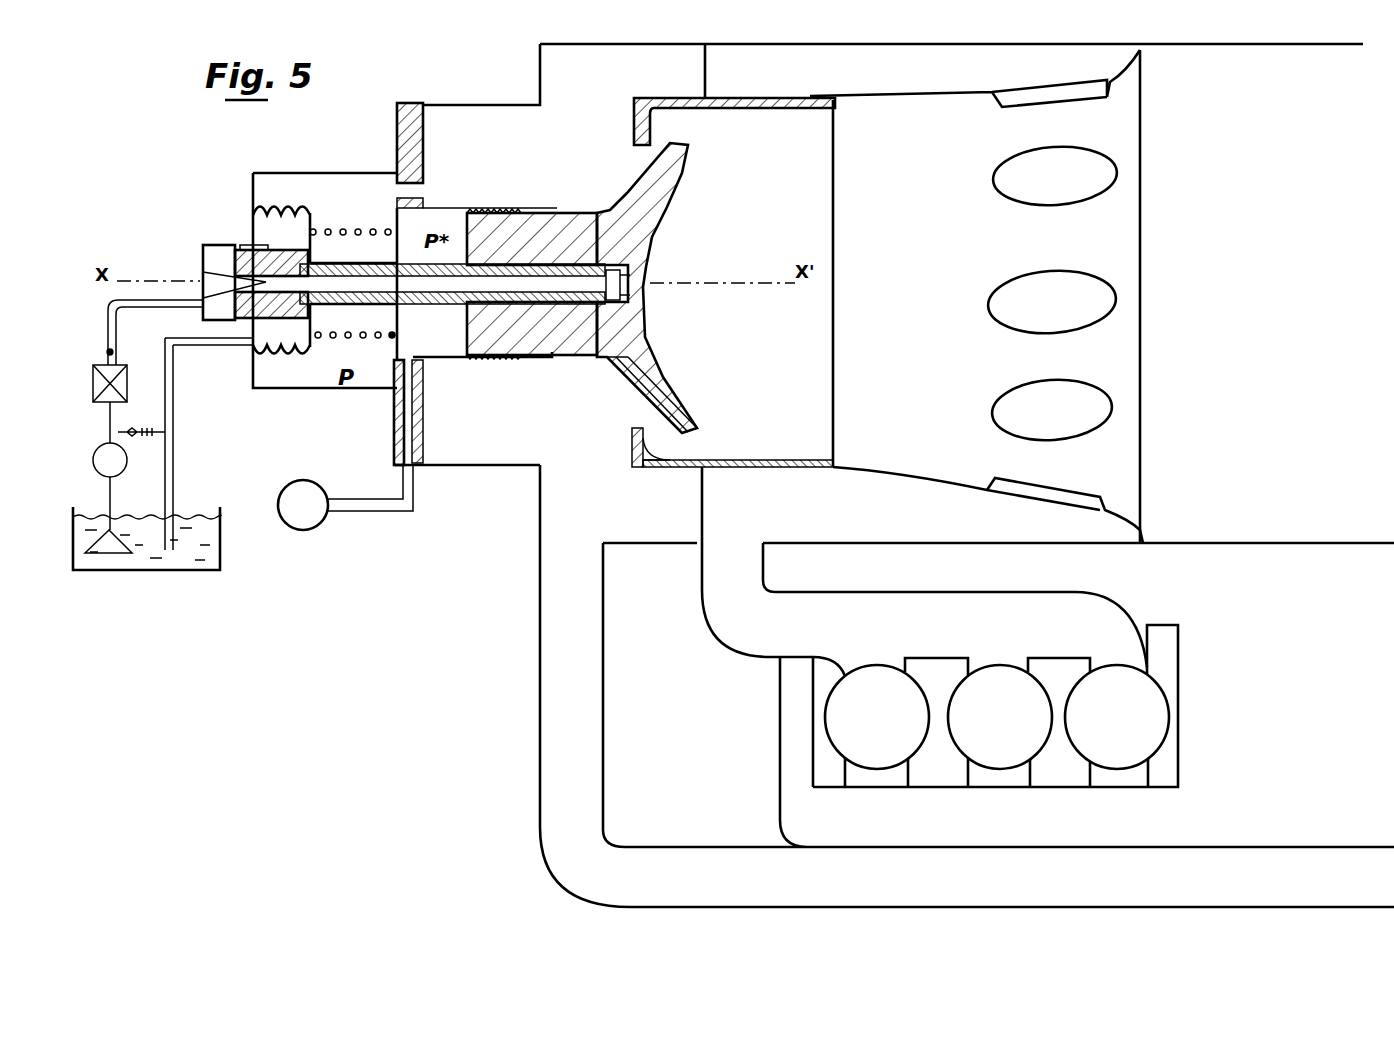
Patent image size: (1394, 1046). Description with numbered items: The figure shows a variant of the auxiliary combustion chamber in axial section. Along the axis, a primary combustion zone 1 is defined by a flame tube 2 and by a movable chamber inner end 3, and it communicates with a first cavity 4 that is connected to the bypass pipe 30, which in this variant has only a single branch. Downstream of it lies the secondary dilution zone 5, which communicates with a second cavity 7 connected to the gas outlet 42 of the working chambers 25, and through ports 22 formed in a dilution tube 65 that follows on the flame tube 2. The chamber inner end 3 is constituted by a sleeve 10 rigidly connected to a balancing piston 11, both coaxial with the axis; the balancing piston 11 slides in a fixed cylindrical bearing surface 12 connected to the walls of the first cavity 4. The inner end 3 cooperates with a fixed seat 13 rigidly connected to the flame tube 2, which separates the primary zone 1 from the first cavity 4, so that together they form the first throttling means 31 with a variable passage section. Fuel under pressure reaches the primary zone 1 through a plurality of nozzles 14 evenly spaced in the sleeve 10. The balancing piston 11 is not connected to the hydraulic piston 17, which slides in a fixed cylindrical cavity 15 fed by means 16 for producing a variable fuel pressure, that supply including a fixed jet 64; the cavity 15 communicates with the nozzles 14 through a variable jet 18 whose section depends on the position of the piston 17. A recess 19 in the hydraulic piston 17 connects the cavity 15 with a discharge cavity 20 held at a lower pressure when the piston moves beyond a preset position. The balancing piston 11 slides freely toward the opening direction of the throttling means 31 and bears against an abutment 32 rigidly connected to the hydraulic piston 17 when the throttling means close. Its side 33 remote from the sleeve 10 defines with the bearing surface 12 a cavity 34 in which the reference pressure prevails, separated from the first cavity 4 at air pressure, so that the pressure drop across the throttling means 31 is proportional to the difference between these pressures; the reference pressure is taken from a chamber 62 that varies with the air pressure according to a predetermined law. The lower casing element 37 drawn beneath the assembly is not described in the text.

The primary combustion zone 1 is at (738, 205).
The flame tube 2 is at (762, 460).
The chamber inner end 3 is at (658, 333).
The first cavity 4 is at (486, 166).
The secondary dilution zone 5 is at (1295, 176).
The second cavity 7 is at (878, 517).
The sleeve 10 is at (672, 384).
The balancing piston 11 is at (599, 342).
The cylindrical bearing surface 12 is at (497, 212).
The fixed seat 13 is at (622, 440).
The nozzles 14 is at (690, 413).
The fixed cylindrical cavity 15 is at (213, 302).
The means for producing variable fuel pressure 16 is at (90, 347).
The hydraulic piston 17 is at (277, 372).
The variable jet 18 is at (248, 312).
The recess 19 is at (245, 245).
The discharge cavity 20 is at (260, 212).
The ports 22 is at (1100, 290).
The working chambers 25 is at (997, 717).
The bypass pipe 30 is at (562, 762).
The first throttling means 31 is at (633, 443).
The abutment 32 is at (582, 305).
The side of the balancing piston 33 is at (467, 325).
The cavity 34 is at (450, 360).
The base plate 37 is at (1275, 872).
The gas outlet 42 is at (987, 608).
The chamber 62 is at (312, 532).
The fixed jet 64 is at (113, 352).
The dilution tube 65 is at (912, 478).